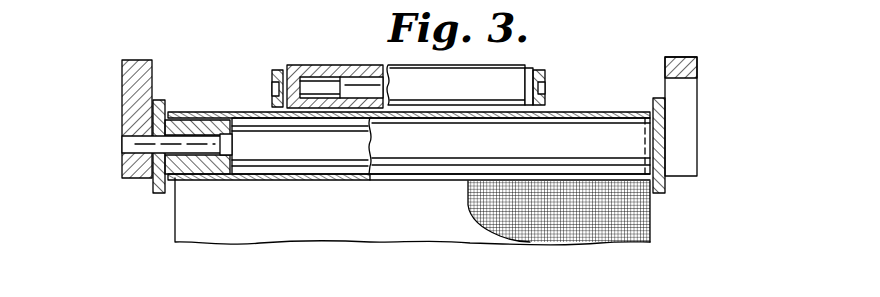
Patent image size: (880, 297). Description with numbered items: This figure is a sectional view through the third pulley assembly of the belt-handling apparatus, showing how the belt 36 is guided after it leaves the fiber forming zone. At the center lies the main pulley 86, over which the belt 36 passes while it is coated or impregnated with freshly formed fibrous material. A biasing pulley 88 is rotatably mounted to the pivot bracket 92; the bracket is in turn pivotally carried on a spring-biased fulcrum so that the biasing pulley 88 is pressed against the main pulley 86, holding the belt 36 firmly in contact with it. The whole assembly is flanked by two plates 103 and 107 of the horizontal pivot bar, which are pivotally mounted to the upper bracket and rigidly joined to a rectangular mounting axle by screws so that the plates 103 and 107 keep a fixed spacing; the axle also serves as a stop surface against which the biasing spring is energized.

The belt 36 is at (216, 112).
The main pulley 86 is at (625, 138).
The biasing pulley 88 is at (465, 82).
The pivot bracket 92 is at (276, 70).
The plate 103 is at (135, 77).
The plate 107 is at (692, 74).